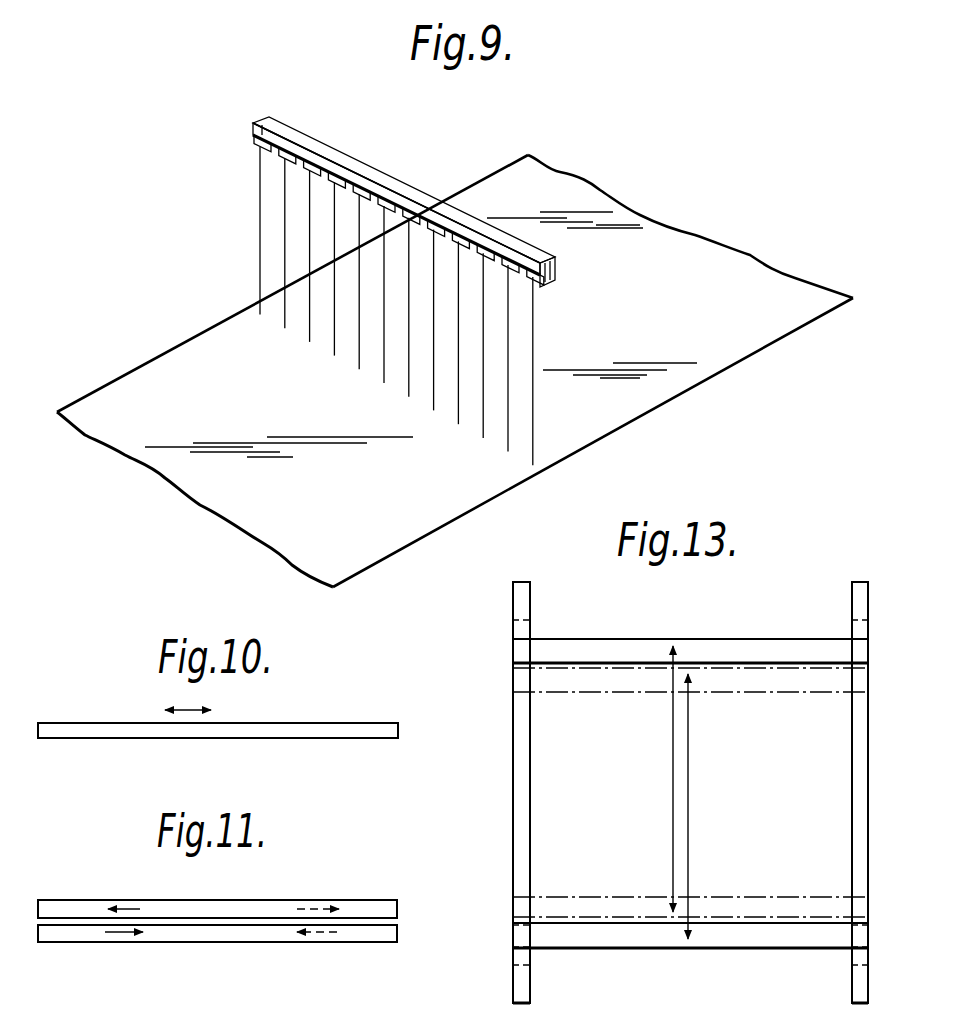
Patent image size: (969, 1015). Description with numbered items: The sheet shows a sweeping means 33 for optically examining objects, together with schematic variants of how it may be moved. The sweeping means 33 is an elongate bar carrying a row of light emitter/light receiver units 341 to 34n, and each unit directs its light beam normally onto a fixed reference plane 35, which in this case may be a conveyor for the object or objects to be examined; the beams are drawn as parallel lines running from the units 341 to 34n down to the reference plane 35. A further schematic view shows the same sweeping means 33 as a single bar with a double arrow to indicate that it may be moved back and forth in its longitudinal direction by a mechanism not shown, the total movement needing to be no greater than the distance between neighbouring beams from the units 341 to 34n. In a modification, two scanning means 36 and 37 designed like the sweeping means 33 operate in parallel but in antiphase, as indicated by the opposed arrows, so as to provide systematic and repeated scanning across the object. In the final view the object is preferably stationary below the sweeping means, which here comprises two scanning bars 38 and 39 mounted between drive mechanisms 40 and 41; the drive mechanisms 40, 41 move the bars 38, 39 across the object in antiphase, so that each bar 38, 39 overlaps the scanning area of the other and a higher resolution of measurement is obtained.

In FIG. 9, the sweeping means 33 is at (370, 172).
In FIG. 9, the light emitter/light receiver unit 341 is at (255, 147).
In FIG. 9, the light emitter/light receiver unit 34n is at (551, 284).
In FIG. 9, the fixed reference plane 35 is at (684, 313).
In FIG. 11, the scanning means 36 is at (350, 910).
In FIG. 11, the scanning means 37 is at (73, 933).
In FIG. 13, the scanning bar 38 is at (740, 648).
In FIG. 13, the scanning bar 39 is at (743, 935).
In FIG. 13, the drive mechanism 40 is at (522, 778).
In FIG. 13, the drive mechanism 41 is at (858, 798).